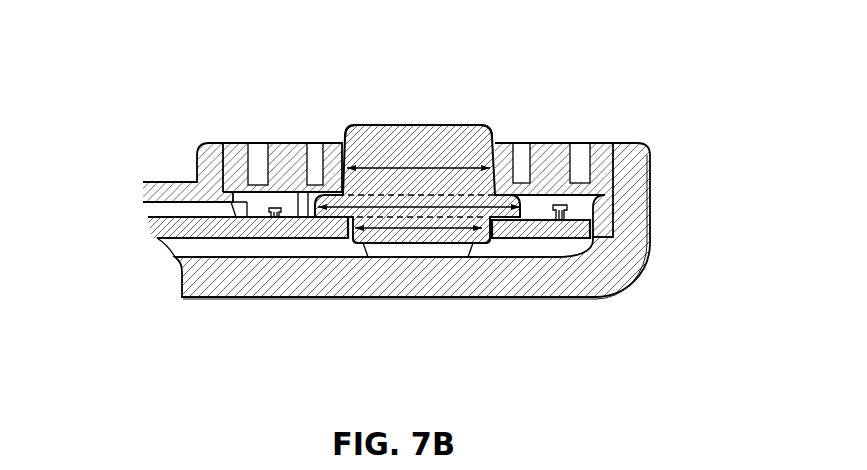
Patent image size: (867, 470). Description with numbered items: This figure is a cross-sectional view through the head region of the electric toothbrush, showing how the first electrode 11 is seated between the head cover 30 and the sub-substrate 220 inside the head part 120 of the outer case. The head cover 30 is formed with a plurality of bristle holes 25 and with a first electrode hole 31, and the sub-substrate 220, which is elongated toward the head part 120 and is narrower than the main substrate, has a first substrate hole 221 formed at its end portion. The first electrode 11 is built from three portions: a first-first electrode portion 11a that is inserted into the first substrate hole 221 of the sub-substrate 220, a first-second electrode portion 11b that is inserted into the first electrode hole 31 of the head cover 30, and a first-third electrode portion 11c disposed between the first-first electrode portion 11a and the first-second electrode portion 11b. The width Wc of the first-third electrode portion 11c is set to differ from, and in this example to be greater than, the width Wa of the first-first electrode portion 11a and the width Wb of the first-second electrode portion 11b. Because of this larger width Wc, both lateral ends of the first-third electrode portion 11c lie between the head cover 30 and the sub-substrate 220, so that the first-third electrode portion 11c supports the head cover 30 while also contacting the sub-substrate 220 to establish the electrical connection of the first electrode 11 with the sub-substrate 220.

The first electrode 11 is at (490, 120).
The first-first electrode portion 11a is at (442, 238).
The first-second electrode portion 11b is at (355, 153).
The first-third electrode portion 11c is at (392, 212).
The bristle holes 25 is at (263, 150).
The head cover 30 is at (605, 152).
The first electrode hole 31 is at (495, 143).
The head part 120 is at (579, 278).
The sub-substrate 220 is at (237, 228).
The first substrate hole 221 is at (496, 222).
The width of the first-first electrode portion Wa is at (385, 206).
The width of the first-second electrode portion Wb is at (472, 167).
The width of the first-third electrode portion Wc is at (430, 206).